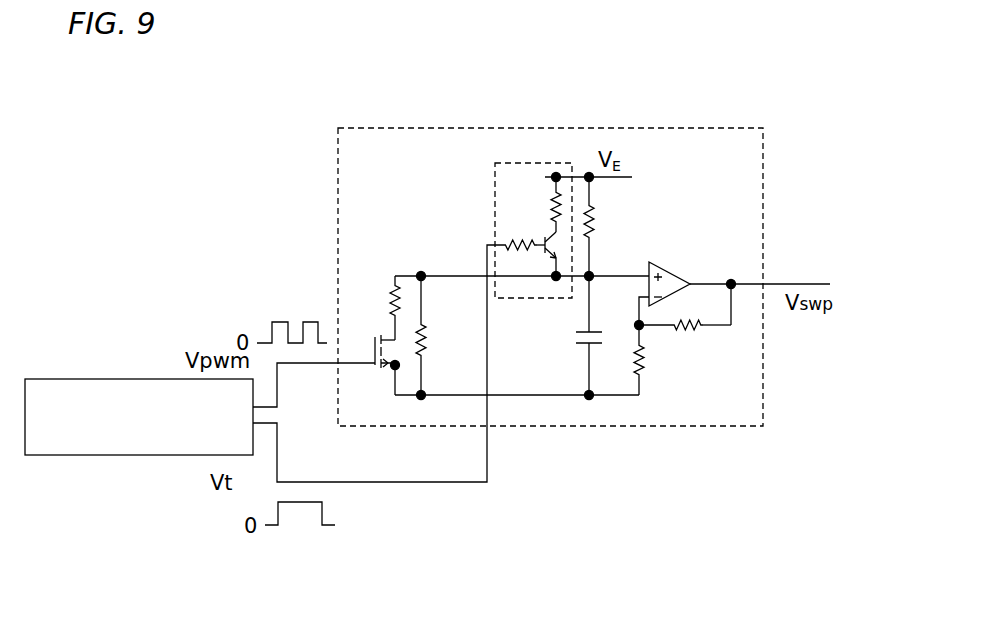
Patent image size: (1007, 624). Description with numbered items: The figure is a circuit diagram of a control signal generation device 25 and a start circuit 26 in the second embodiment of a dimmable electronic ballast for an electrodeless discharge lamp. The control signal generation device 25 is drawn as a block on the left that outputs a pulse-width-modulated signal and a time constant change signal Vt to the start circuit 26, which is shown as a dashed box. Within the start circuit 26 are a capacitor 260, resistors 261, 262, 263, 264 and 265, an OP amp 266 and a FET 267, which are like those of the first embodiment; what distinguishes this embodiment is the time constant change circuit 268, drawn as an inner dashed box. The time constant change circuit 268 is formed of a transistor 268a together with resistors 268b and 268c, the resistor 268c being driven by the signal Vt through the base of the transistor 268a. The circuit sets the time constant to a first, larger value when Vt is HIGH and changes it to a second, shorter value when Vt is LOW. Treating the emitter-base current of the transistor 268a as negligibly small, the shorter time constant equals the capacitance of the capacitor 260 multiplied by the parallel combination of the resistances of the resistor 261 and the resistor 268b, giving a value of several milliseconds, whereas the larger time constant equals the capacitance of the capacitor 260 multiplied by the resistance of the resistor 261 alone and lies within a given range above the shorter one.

The control signal generation device 25 is at (72, 380).
The start circuit 26 is at (370, 128).
The capacitor 260 is at (598, 341).
The resistor 261 is at (591, 226).
The resistor 262 is at (644, 365).
The resistor 263 is at (690, 330).
The resistor 264 is at (398, 296).
The resistor 265 is at (425, 345).
The OP amp 266 is at (667, 270).
The FET 267 is at (382, 372).
The time constant change circuit 268 is at (521, 218).
The transistor 268a is at (545, 253).
The resistor 268b is at (557, 198).
The resistor 268c is at (509, 243).